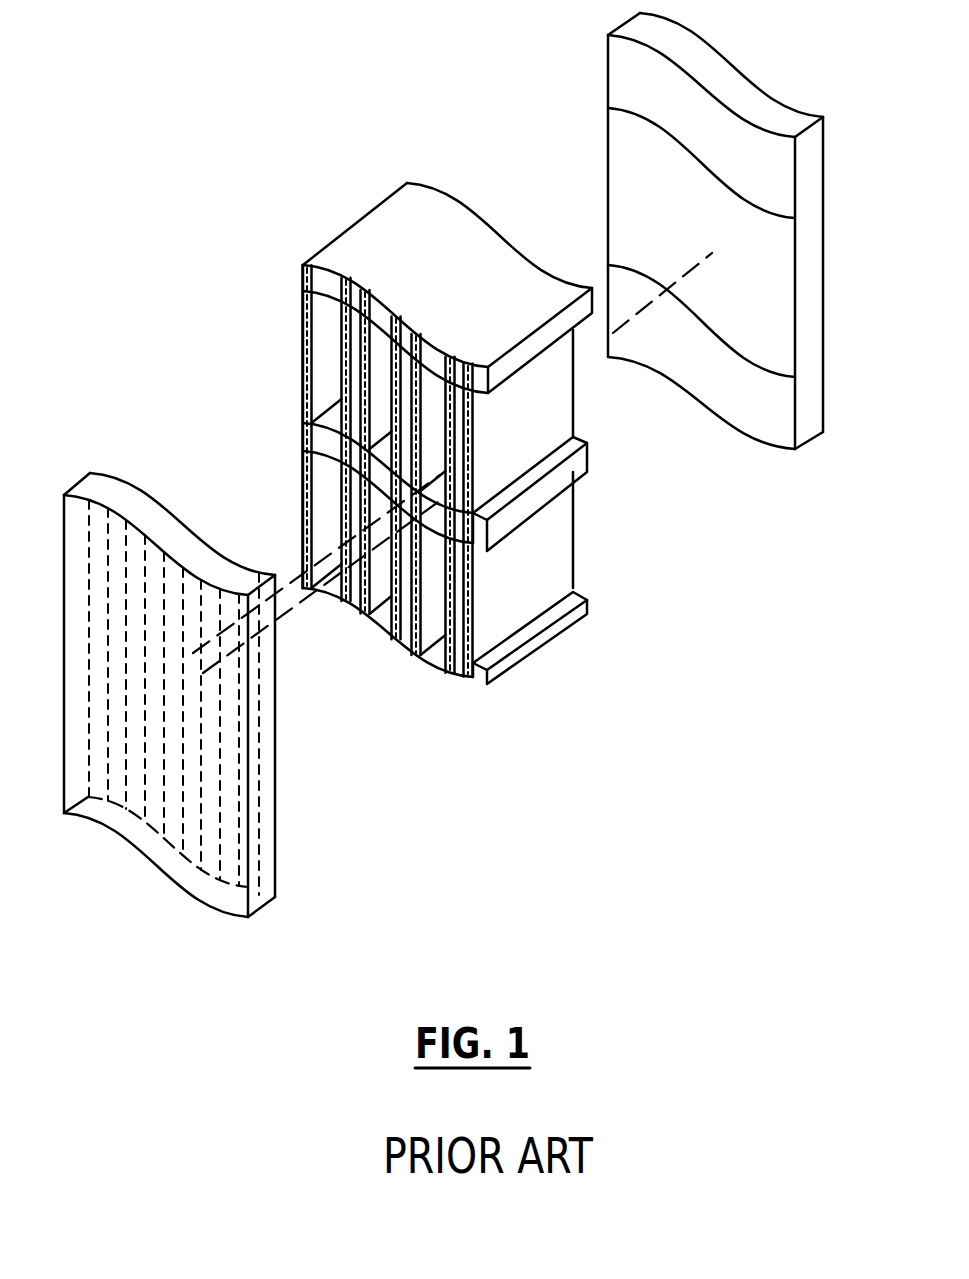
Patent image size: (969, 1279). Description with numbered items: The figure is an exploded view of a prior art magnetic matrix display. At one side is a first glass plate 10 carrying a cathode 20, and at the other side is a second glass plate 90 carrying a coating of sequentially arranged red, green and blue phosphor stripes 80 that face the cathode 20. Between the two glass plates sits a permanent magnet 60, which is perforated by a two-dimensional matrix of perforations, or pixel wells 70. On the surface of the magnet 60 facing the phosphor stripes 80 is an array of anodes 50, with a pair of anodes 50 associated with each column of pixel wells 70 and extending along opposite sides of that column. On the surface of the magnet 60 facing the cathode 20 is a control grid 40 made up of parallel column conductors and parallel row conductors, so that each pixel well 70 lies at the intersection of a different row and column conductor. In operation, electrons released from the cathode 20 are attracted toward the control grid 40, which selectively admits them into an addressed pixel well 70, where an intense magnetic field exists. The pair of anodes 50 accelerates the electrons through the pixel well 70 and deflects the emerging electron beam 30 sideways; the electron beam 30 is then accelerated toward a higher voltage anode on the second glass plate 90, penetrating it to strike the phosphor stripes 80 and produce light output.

The first glass plate 10 is at (607, 83).
The cathode 20 is at (775, 208).
The electron beam 30 is at (623, 328).
The control grid 40 is at (575, 383).
The anodes 50 is at (423, 450).
The permanent magnet 60 is at (535, 650).
The pixel wells 70 is at (434, 637).
The phosphor stripes 80 is at (209, 684).
The second glass plate 90 is at (250, 867).